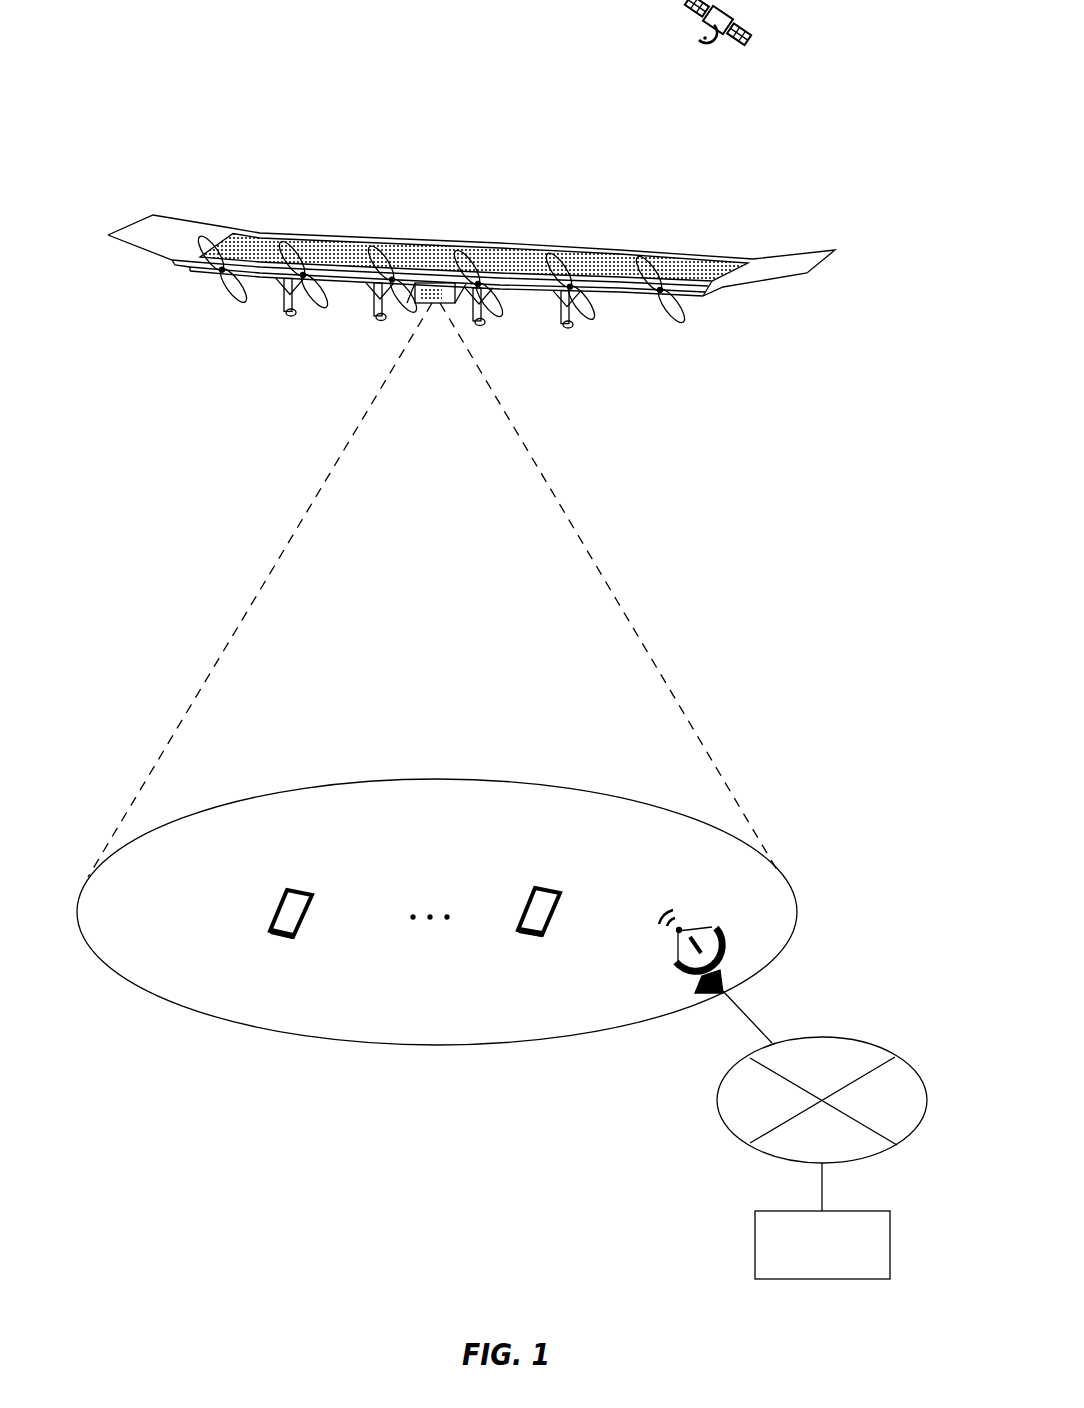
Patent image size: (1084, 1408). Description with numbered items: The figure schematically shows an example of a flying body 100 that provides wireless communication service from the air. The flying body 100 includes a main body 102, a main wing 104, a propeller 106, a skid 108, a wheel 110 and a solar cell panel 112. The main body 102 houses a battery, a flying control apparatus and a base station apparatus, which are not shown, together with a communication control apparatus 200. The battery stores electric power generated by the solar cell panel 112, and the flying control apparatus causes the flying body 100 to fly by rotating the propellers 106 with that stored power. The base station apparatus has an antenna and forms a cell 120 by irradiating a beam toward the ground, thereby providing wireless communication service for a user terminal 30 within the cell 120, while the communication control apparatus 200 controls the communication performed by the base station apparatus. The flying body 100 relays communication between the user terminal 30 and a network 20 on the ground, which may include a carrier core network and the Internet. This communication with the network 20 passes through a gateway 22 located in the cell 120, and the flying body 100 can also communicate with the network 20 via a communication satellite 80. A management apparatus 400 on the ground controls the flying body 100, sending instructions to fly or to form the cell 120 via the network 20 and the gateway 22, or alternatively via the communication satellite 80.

The flying body 100 is at (134, 168).
The main body 102 is at (415, 287).
The main wing 104 is at (172, 226).
The propeller 106 is at (227, 288).
The skid 108 is at (284, 300).
The wheel 110 is at (297, 313).
The solar cell panel 112 is at (266, 240).
The communication control apparatus 200 is at (460, 247).
The communication satellite 80 is at (752, 25).
The cell 120 is at (581, 781).
The user terminal 30 is at (316, 899).
The gateway 22 is at (679, 962).
The network 20 is at (870, 1046).
The management apparatus 400 is at (880, 1202).